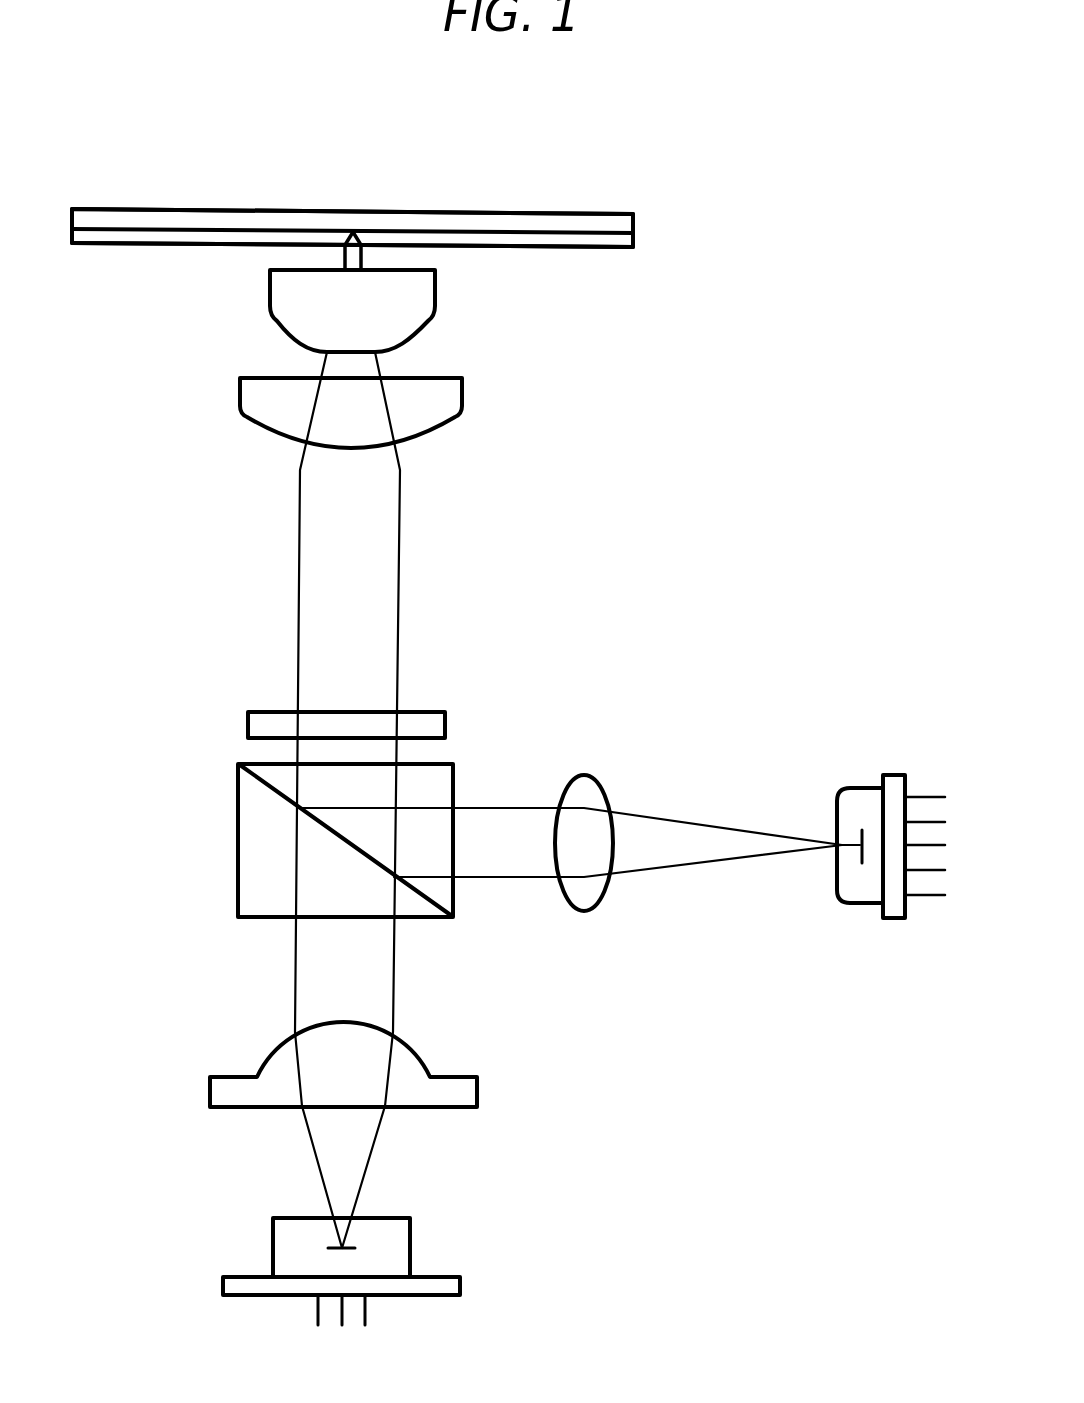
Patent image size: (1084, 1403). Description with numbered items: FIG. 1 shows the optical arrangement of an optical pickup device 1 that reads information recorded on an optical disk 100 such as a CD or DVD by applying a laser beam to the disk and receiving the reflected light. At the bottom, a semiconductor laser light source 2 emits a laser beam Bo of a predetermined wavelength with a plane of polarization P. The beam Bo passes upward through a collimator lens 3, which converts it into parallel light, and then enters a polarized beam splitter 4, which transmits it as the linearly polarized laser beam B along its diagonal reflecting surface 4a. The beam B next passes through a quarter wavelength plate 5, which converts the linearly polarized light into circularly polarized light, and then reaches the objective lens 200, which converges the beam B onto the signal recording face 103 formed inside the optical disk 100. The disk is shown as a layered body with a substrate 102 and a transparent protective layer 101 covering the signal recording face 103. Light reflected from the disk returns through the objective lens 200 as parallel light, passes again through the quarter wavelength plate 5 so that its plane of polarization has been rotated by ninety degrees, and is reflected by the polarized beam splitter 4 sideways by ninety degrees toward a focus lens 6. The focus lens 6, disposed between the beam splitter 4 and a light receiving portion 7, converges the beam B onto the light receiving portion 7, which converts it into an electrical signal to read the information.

The optical pickup device 1 is at (742, 543).
The laser light source 2 is at (397, 1252).
The collimator lens 3 is at (457, 1093).
The polarized beam splitter 4 is at (440, 781).
The reflecting surface of beam splitter 4a is at (433, 897).
The quarter wavelength plate 5 is at (433, 727).
The focus lens 6 is at (587, 900).
The light receiving portion 7 is at (862, 797).
The optical disk 100 is at (538, 214).
The protective layer of optical disc 101 is at (634, 218).
The substrate 102 is at (634, 240).
The signal recording face 103 is at (575, 236).
The objective lens 200 is at (500, 250).
The laser beam B is at (397, 593).
The laser beam Bo is at (393, 978).